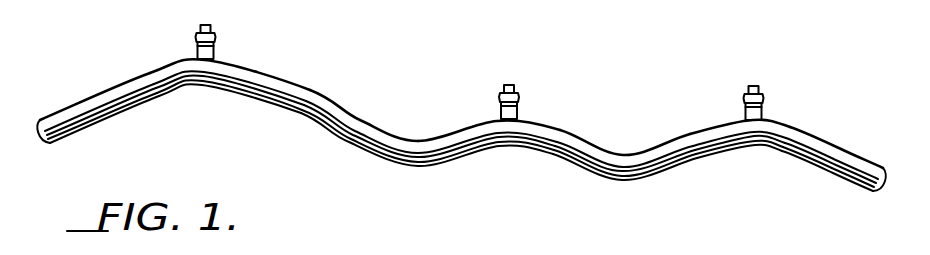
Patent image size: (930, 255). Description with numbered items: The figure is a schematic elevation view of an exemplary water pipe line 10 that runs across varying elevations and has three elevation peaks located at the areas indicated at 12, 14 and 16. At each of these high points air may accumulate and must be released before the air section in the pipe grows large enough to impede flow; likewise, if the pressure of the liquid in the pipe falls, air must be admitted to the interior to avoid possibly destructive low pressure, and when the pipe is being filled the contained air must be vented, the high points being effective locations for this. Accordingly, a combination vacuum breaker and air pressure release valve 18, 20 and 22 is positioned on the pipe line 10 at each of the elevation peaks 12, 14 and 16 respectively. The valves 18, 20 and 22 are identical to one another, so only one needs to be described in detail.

The pipe line 10 is at (461, 104).
The elevation peak 12 is at (203, 72).
The elevation peak 14 is at (508, 132).
The elevation peak 16 is at (752, 132).
The combination vacuum breaker and air pressure release valve 18 is at (213, 48).
The combination vacuum breaker and air pressure release valve 20 is at (518, 108).
The combination vacuum breaker and air pressure release valve 22 is at (762, 107).